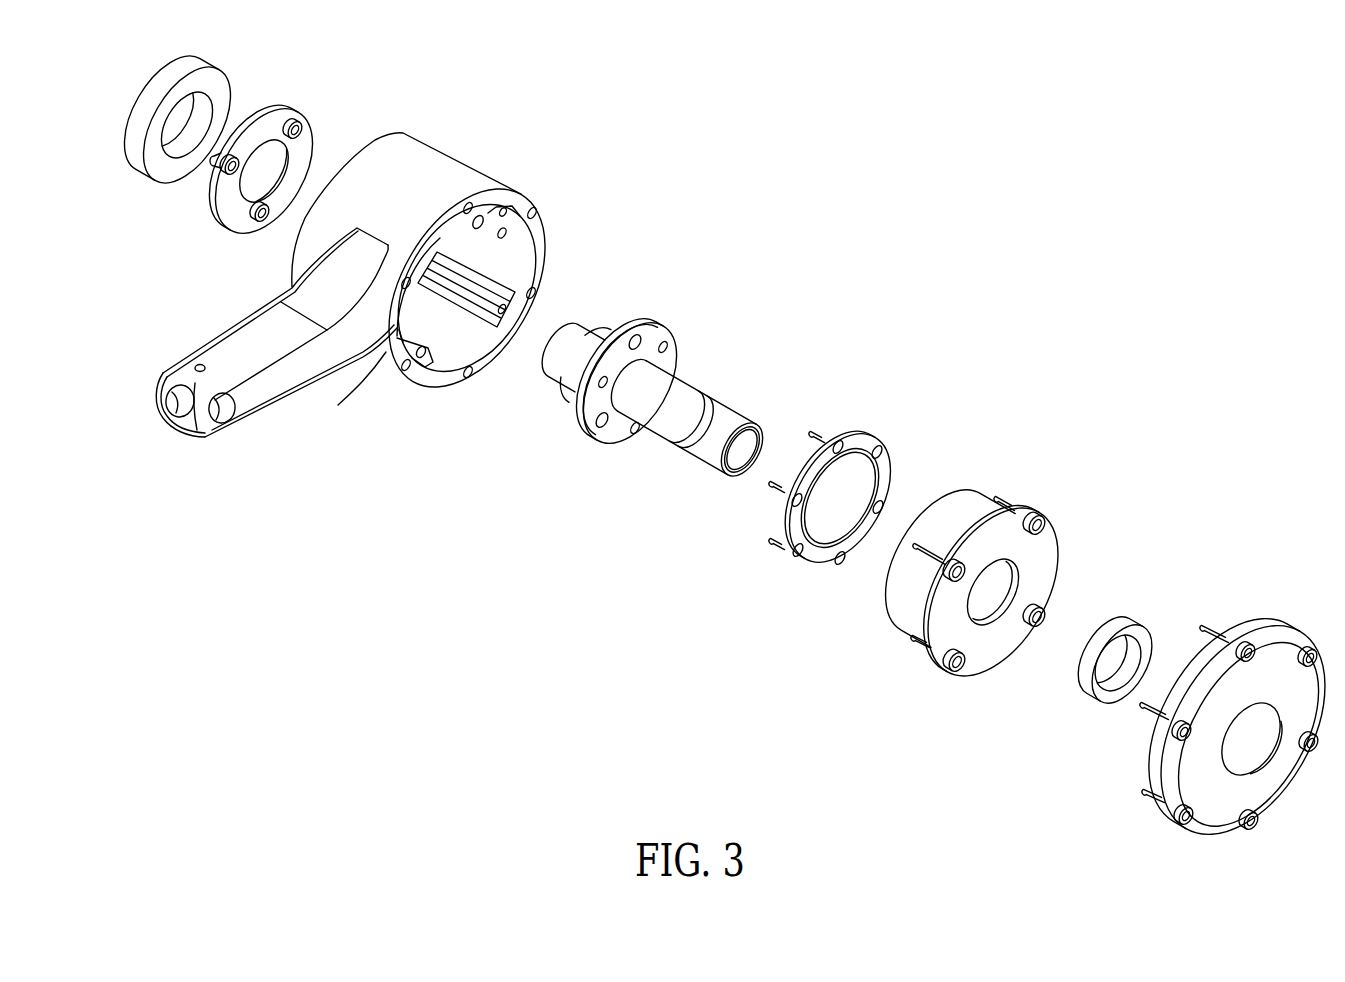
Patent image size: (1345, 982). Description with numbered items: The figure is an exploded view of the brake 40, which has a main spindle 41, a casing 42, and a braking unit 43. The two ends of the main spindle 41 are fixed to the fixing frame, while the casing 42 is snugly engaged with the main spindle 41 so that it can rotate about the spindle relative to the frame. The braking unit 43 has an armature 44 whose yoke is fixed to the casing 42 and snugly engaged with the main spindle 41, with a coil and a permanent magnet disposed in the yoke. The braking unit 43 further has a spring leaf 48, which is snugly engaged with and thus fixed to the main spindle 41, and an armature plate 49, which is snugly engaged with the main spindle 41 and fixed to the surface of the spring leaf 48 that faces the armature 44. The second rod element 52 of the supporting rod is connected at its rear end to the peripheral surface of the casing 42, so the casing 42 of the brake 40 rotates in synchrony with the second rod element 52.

The brake 40 is at (1032, 300).
The main spindle 41 is at (737, 413).
The casing 42 is at (440, 178).
The braking unit 43 is at (577, 560).
The armature 44 is at (891, 632).
The spring leaf 48 is at (615, 433).
The armature plate 49 is at (810, 563).
The second rod element 52 is at (277, 378).